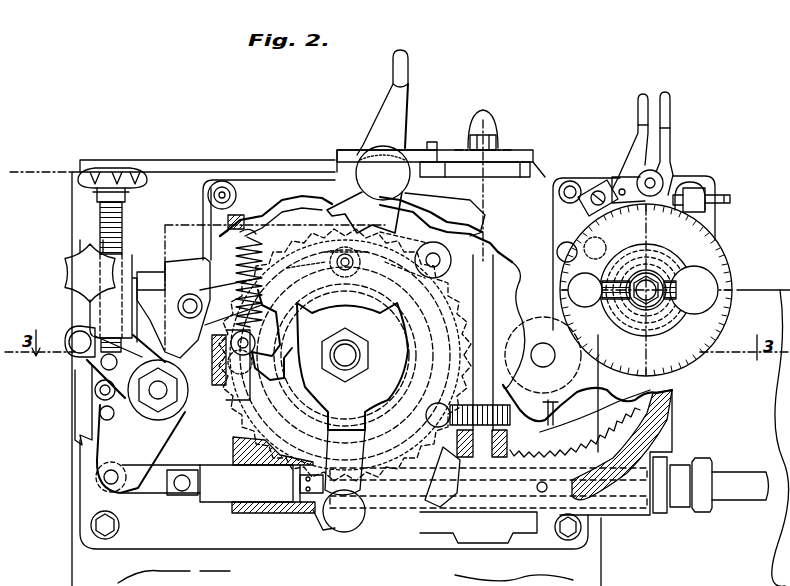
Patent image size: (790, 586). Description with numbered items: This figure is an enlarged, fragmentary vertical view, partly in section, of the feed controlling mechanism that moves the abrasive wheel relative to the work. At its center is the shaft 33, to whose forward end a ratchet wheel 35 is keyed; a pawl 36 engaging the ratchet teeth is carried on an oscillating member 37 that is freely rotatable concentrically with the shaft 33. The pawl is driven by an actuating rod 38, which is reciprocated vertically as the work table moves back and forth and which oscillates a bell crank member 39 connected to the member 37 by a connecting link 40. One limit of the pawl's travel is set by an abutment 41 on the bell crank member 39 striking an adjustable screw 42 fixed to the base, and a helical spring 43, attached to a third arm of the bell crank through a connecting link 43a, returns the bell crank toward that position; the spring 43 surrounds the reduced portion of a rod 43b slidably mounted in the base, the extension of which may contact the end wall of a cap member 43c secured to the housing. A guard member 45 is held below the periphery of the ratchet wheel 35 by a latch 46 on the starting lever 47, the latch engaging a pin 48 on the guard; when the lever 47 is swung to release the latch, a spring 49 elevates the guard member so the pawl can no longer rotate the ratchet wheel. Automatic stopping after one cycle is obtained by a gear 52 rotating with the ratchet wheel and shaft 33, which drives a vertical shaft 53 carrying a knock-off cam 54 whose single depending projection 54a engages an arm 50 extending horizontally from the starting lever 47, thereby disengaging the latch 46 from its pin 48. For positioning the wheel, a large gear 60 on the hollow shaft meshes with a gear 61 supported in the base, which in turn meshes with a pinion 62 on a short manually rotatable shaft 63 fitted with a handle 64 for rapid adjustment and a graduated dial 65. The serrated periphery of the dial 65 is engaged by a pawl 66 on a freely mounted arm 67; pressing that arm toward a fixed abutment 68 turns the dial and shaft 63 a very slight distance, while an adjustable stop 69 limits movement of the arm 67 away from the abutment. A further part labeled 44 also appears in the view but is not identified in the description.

The shaft 33 is at (345, 370).
The ratchet wheel 35 is at (255, 375).
The pawl 36 is at (424, 124).
The oscillating member 37 is at (462, 263).
The actuating rod 38 is at (82, 388).
The bell crank member 39 is at (123, 438).
The connecting link 40 is at (199, 306).
The abutment 41 is at (95, 395).
The adjustable screw 42 is at (102, 228).
The helical spring 43 is at (300, 515).
The connecting link 43a is at (155, 488).
The rod 43b is at (247, 490).
The cap member 43c is at (743, 495).
The rotor cam 44 is at (345, 357).
The guard member 45 is at (443, 308).
The latch 46 is at (345, 195).
The starting lever 47 is at (405, 67).
The pin 48 is at (344, 256).
The spring 49 is at (232, 183).
The arm 50 is at (440, 208).
The gear 52 is at (345, 459).
The vertical shaft 53 is at (484, 294).
The knock-off cam 54 is at (490, 165).
The projection 54a is at (472, 168).
The large gear 60 is at (290, 365).
The gear 61 is at (598, 417).
The pinion 62 is at (622, 272).
The shaft 63 is at (658, 292).
The handle 64 is at (698, 280).
The graduated dial 65 is at (688, 245).
The pawl 66 is at (626, 186).
The arm 67 is at (665, 150).
The fixed abutment 68 is at (643, 112).
The adjustable stop 69 is at (722, 197).